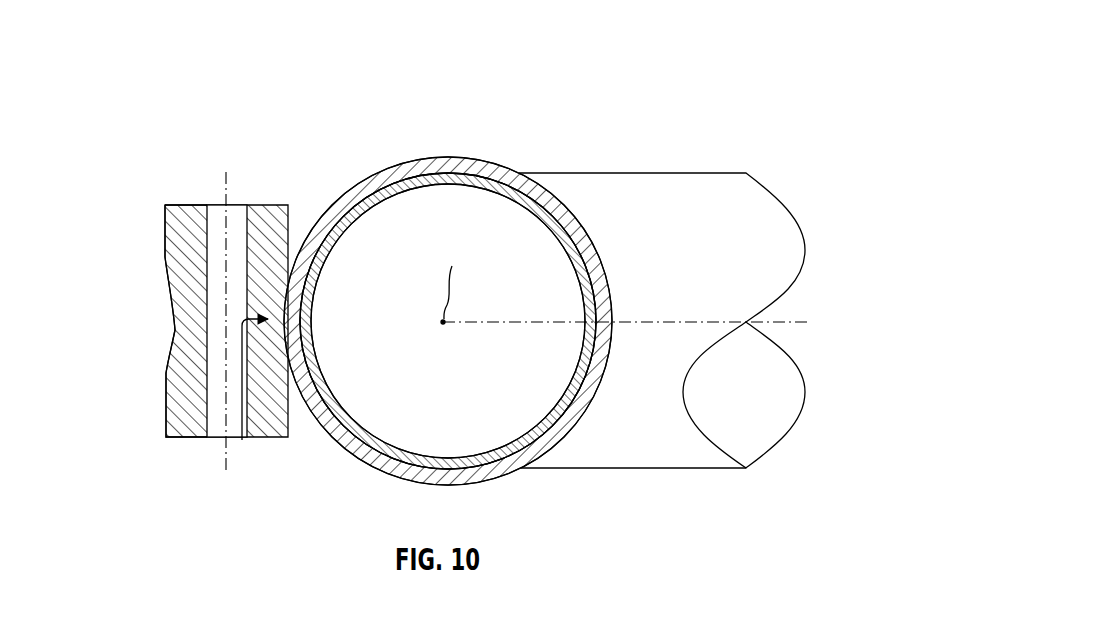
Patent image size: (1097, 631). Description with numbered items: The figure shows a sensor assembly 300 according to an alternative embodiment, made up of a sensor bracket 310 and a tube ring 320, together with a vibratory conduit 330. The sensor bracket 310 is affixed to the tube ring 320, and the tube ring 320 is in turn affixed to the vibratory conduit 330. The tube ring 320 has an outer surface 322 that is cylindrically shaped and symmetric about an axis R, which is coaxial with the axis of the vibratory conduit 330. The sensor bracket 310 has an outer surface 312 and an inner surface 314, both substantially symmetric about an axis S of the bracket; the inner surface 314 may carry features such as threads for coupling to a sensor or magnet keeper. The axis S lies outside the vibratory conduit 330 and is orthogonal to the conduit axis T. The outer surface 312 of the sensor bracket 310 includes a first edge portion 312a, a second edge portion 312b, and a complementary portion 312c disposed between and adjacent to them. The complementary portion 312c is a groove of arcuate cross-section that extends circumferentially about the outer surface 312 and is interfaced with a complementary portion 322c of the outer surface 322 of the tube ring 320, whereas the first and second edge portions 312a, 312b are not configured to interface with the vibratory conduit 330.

The sensor assembly 300 is at (328, 30).
The sensor bracket 310 is at (185, 440).
The outer surface 312 is at (120, 249).
The first edge portion 312a is at (161, 216).
The second edge portion 312b is at (163, 399).
The complementary portion 312c is at (172, 341).
The inner surface 314 is at (213, 220).
The tube ring 320 is at (457, 127).
The outer surface 322 is at (362, 158).
The complementary portion 322c is at (242, 440).
The vibratory conduit 330 is at (685, 127).